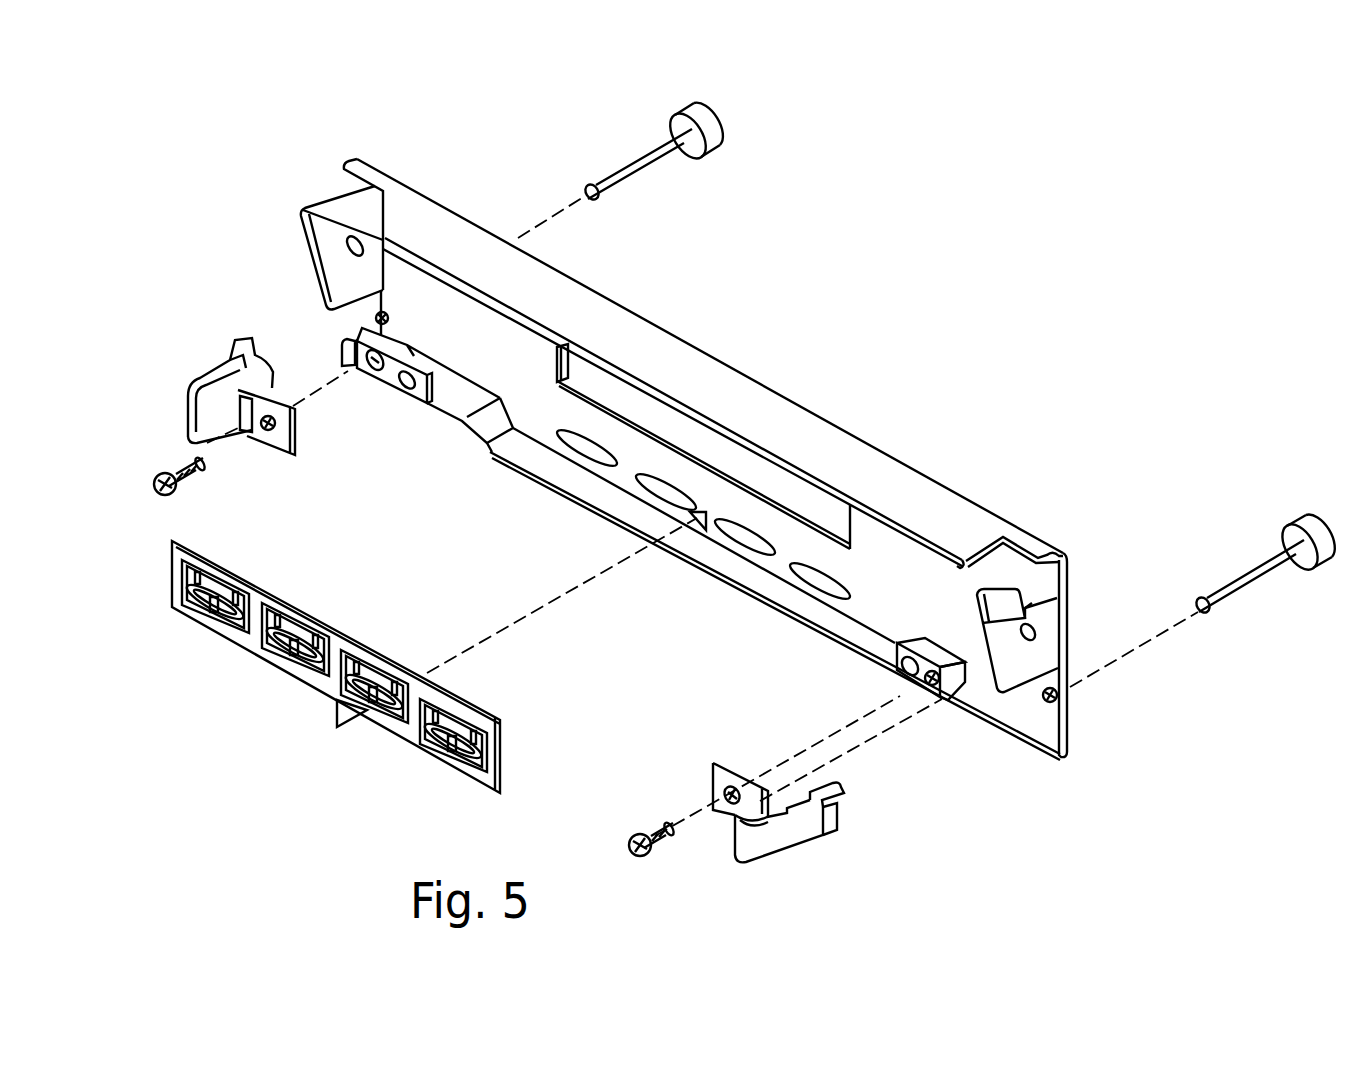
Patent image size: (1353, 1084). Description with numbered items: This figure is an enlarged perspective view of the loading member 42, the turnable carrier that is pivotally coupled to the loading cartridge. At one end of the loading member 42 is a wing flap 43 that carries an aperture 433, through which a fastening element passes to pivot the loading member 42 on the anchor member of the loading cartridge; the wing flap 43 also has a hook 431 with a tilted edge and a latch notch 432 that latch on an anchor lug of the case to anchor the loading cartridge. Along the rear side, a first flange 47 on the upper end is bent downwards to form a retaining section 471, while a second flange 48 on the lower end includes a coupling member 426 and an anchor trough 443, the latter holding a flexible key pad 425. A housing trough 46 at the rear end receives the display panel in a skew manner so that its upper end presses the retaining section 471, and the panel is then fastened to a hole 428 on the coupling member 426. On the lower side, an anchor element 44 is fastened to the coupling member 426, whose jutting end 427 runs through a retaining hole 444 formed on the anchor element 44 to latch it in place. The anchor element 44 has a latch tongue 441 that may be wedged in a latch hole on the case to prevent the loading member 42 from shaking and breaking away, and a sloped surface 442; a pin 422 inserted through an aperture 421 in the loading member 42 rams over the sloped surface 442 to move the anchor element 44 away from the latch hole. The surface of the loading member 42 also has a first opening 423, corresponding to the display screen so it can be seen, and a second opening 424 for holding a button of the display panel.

The loading member 42 is at (885, 452).
The aperture 421 is at (1048, 705).
The pin 422 is at (1305, 528).
The first opening 423 is at (750, 470).
The second opening 424 is at (815, 580).
The flexible key pad 425 is at (290, 668).
The coupling member 426 is at (907, 693).
The jutting end 427 is at (948, 702).
The hole 428 is at (895, 660).
The wing flap 43 is at (1058, 642).
The hook 431 is at (1003, 608).
The latch notch 432 is at (1031, 603).
The aperture 433 is at (1036, 630).
The anchor element 44 is at (819, 827).
The latch tongue 441 is at (835, 782).
The sloped surface 442 is at (833, 818).
The anchor trough 443 is at (553, 420).
The retaining hole 444 is at (238, 413).
The housing trough 46 is at (485, 360).
The first flange 47 is at (680, 360).
The retaining section 471 is at (962, 556).
The second flange 48 is at (600, 493).